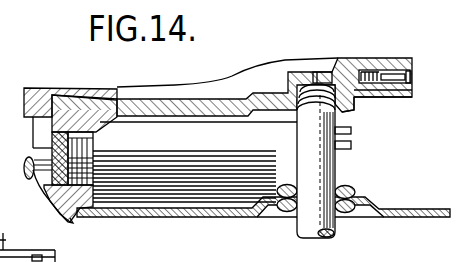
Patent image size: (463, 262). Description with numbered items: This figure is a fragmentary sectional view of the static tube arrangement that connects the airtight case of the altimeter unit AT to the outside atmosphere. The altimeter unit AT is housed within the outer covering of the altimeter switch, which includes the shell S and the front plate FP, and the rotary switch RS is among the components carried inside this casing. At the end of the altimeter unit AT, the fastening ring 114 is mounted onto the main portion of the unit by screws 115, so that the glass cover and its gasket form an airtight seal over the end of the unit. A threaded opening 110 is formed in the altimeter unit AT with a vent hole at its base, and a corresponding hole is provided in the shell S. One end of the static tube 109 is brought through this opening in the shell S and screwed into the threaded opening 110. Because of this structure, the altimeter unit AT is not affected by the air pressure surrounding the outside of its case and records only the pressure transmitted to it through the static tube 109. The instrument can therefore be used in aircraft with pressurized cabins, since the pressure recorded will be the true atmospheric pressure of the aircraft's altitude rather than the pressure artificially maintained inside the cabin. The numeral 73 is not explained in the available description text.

The seal ring 73 is at (33, 158).
The static tube 109 is at (323, 224).
The threaded opening 110 is at (342, 113).
The fastening ring 114 is at (409, 96).
The screws 115 is at (412, 73).
The altimeter unit AT is at (348, 106).
The front plate FP is at (72, 219).
The shell S is at (150, 215).
The rotary switch RS is at (219, 196).